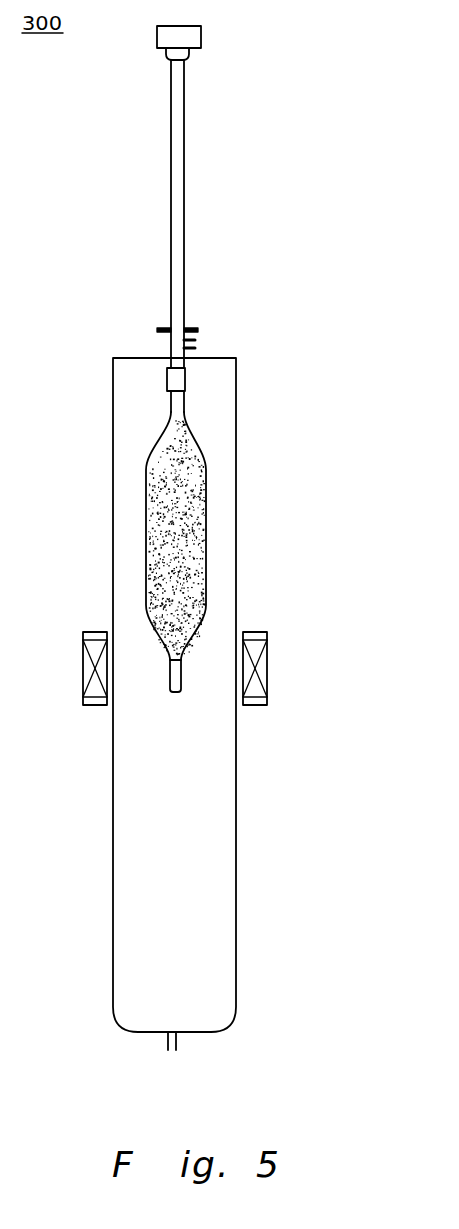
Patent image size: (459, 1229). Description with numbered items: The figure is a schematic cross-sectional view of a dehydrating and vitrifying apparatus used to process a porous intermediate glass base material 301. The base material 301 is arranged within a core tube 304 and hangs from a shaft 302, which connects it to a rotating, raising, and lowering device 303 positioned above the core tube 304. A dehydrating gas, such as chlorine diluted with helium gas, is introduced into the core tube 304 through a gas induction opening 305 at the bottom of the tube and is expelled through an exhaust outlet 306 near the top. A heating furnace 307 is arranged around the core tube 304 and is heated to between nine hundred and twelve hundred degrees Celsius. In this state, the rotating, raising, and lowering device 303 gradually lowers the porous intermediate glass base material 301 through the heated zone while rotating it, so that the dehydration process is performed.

The porous intermediate glass base material 301 is at (197, 532).
The shaft 302 is at (184, 275).
The rotating, raising, and lowering device 303 is at (183, 37).
The core tube 304 is at (237, 768).
The gas induction opening 305 is at (171, 1053).
The exhaust outlet 306 is at (204, 345).
The heating furnace 307 is at (263, 668).